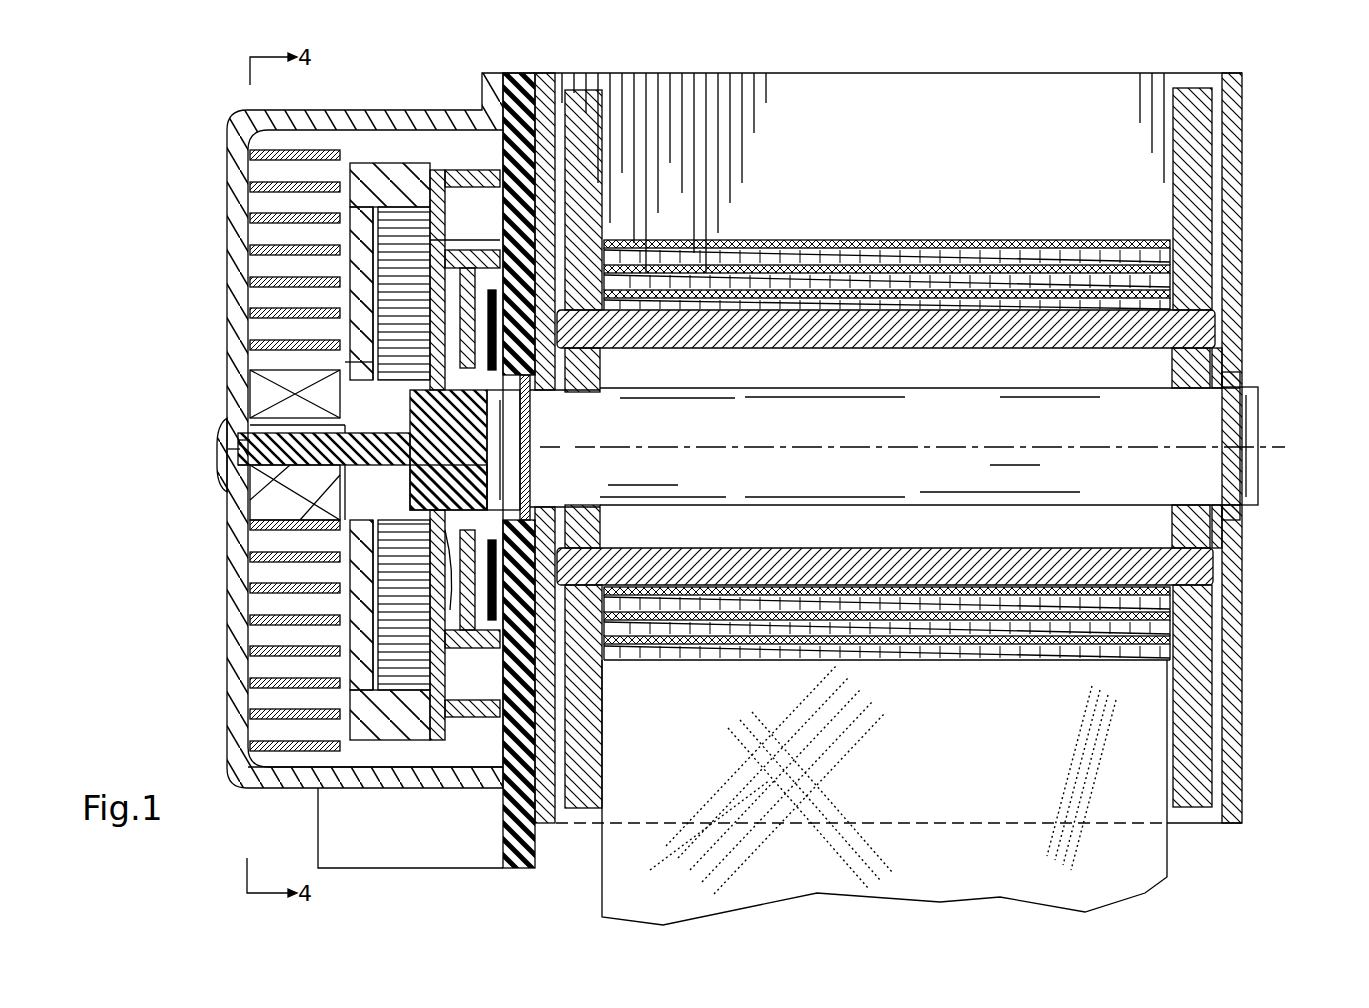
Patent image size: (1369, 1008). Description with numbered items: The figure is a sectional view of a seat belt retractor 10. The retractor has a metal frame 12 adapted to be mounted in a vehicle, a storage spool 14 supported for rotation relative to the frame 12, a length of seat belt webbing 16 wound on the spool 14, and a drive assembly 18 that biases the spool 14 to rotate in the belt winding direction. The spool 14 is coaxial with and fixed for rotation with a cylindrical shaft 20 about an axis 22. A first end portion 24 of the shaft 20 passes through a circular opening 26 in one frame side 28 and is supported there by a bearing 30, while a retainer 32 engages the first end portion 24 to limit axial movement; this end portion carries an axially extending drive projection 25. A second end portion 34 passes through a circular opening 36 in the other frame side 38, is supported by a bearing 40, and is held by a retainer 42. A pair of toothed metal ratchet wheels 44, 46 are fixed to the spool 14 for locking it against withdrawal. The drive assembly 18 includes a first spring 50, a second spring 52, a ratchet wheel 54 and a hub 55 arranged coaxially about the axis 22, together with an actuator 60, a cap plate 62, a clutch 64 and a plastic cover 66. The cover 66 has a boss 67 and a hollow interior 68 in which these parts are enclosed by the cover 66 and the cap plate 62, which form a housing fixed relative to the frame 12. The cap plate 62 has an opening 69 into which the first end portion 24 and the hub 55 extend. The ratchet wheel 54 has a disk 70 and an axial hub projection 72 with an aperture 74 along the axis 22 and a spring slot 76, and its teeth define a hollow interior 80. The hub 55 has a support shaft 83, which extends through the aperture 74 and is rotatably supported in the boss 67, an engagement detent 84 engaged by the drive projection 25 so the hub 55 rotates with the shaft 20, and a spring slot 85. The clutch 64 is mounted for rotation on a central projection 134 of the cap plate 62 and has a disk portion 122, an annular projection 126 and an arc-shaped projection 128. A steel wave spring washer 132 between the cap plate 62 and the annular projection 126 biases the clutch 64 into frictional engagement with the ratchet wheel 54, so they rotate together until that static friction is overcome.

The seat belt retractor 10 is at (1290, 203).
The frame 12 is at (1100, 105).
The storage spool 14 is at (722, 325).
The seat belt webbing 16 is at (1138, 860).
The drive assembly 18 is at (403, 70).
The cylindrical shaft 20 is at (1003, 408).
The axis 22 is at (1283, 447).
The first end portion 24 is at (571, 473).
The drive projection 25 is at (565, 438).
The circular opening 26 is at (560, 492).
The frame side 28 is at (547, 78).
The bearing 30 is at (565, 422).
The retainer 32 is at (469, 450).
The second end portion 34 is at (1168, 478).
The circular opening 36 is at (1245, 395).
The frame side 38 is at (1238, 88).
The bearing 40 is at (1240, 525).
The retainer 42 is at (1245, 378).
The ratchet wheel 44 is at (598, 188).
The ratchet wheel 46 is at (1185, 160).
The first spring 50 is at (258, 190).
The second spring 52 is at (352, 165).
The ratchet wheel 54 is at (358, 165).
The hub 55 is at (372, 490).
The actuator 60 is at (437, 762).
The cap plate 62 is at (510, 75).
The clutch 64 is at (440, 168).
The cover 66 is at (238, 748).
The boss 67 is at (235, 452).
The hollow interior 68 is at (280, 758).
The opening 69 is at (448, 449).
The disk 70 is at (367, 690).
The axial hub projection 72 is at (265, 498).
The aperture 74 is at (235, 471).
The spring slot 76 is at (345, 430).
The hollow interior 80 is at (372, 700).
The support shaft 83 is at (250, 441).
The engagement detent 84 is at (324, 454).
The spring slot 85 is at (345, 383).
The disk portion 122 is at (443, 242).
The annular projection 126 is at (448, 487).
The arc-shaped projection 128 is at (478, 188).
The wave spring washer 132 is at (465, 625).
The central projection 134 is at (345, 362).